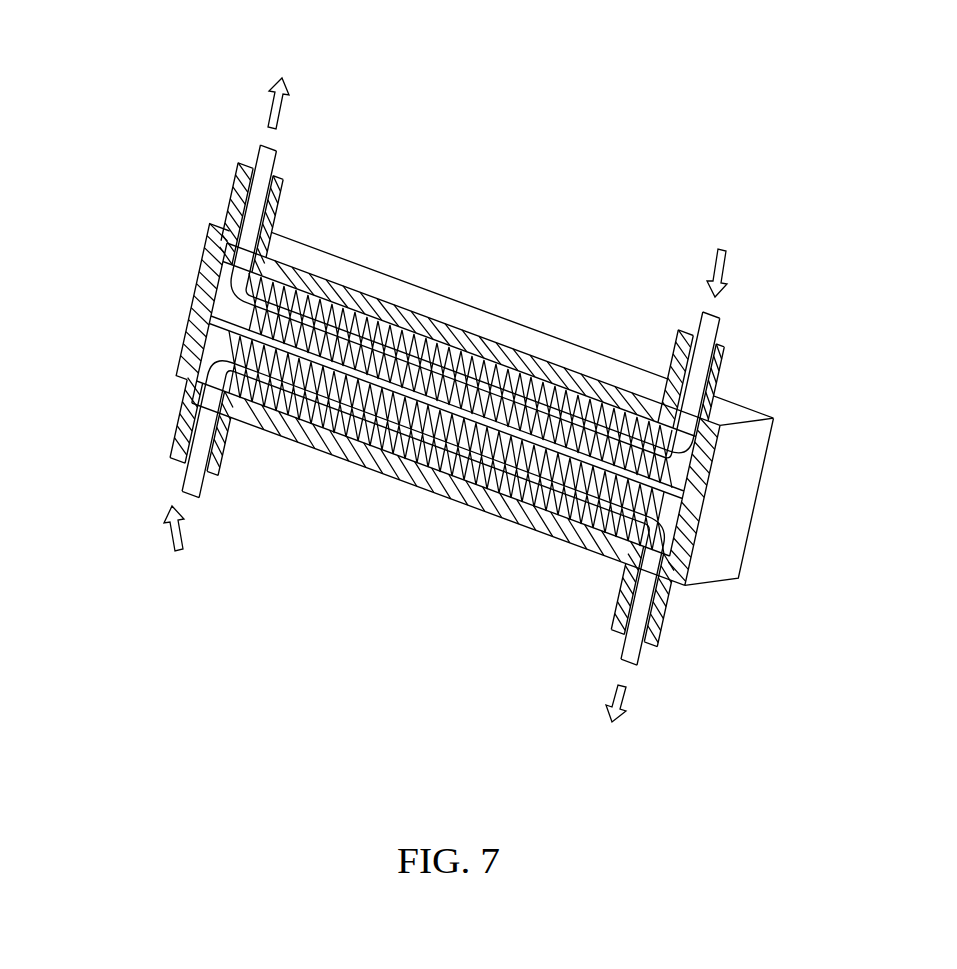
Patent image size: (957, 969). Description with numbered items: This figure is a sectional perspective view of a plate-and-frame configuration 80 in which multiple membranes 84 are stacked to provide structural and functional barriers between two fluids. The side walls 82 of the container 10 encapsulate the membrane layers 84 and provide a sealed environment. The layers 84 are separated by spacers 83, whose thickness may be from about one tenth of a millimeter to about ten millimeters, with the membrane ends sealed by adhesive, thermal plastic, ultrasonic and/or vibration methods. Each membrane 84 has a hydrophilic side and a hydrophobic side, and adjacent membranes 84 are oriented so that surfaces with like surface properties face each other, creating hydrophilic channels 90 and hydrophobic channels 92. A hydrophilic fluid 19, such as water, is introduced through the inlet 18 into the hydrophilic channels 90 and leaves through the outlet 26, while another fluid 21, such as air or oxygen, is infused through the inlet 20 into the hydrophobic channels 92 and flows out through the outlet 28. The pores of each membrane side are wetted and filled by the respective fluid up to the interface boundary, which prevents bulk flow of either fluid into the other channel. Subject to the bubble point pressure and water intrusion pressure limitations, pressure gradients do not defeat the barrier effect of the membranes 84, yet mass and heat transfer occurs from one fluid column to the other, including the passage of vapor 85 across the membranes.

The plate-and-frame configuration 80 is at (706, 157).
The container 10 is at (603, 341).
The side walls 82 is at (513, 332).
The spacers 83 is at (522, 380).
The membranes 84 is at (207, 315).
The vapor 85 is at (405, 405).
The hydrophilic channels 90 is at (690, 453).
The hydrophobic channels 92 is at (675, 515).
The inlet 18 is at (727, 375).
The hydrophilic fluid 19 is at (733, 262).
The outlet 26 is at (280, 203).
The inlet 20 is at (178, 433).
The fluid 21 is at (180, 538).
The outlet 28 is at (662, 605).